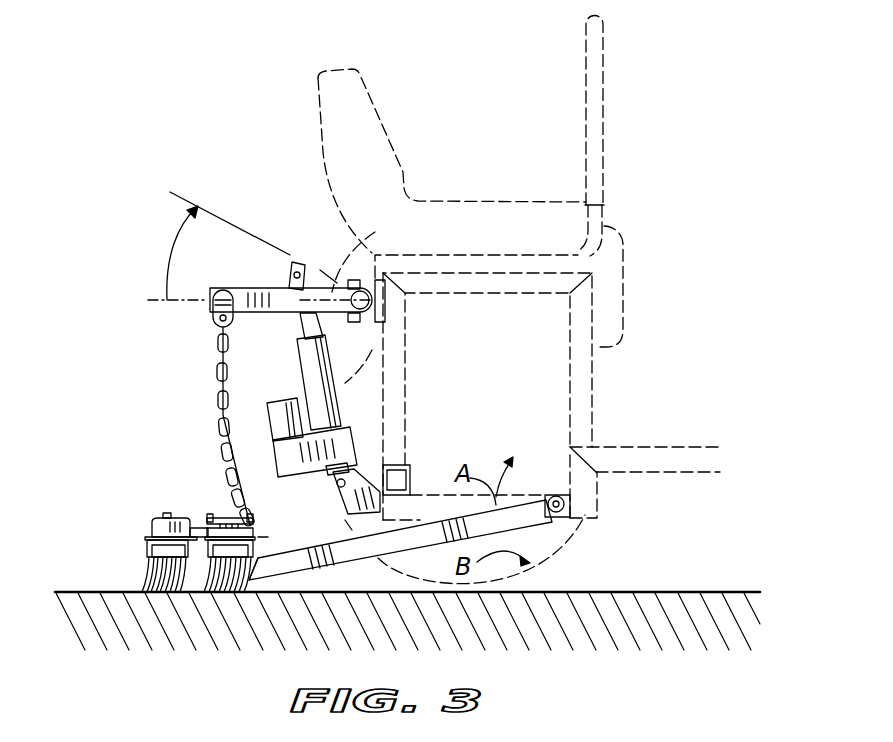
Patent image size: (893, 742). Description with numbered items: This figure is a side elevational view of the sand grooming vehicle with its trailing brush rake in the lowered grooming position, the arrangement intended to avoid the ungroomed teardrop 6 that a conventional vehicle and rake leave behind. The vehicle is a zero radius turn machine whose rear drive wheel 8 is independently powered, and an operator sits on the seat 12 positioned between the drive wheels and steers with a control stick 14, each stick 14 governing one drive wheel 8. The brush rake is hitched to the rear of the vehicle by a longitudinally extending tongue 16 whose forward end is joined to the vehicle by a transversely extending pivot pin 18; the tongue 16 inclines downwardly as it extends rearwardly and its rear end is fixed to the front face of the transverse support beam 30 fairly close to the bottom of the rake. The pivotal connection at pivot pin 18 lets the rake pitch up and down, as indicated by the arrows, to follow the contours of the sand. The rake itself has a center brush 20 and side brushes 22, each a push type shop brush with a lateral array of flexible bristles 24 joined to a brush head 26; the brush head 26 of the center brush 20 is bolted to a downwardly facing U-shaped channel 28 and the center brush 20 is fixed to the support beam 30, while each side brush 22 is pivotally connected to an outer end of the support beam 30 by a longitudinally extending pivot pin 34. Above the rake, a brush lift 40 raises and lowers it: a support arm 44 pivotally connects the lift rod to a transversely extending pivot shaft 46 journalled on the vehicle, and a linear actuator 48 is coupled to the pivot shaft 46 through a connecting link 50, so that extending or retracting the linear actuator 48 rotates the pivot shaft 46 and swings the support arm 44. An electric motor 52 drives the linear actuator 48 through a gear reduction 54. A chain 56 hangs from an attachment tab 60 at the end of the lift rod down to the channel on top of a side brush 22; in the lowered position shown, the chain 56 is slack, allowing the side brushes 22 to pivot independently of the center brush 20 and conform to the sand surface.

The ungroomed teardrop 6 is at (647, 447).
The rear drive wheel 8 is at (566, 540).
The seat 12 is at (481, 200).
The control stick 14 is at (607, 90).
The tongue 16 is at (418, 520).
The pivot pin 18 is at (572, 502).
The center brush 20 is at (179, 523).
The side brush 22 is at (266, 536).
The bristles 24 is at (145, 572).
The brush head 26 is at (131, 523).
The U-shaped channel 28 is at (143, 541).
The support beam 30 is at (263, 553).
The pivot pin 34 is at (226, 520).
The brush lift 40 is at (261, 228).
The support arm 44 is at (262, 288).
The pivot shaft 46 is at (370, 305).
The linear actuator 48 is at (300, 262).
The connecting link 50 is at (347, 262).
The electric motor 52 is at (283, 400).
The gear reduction 54 is at (350, 440).
The chain 56 is at (217, 375).
The attachment tab 60 is at (211, 310).